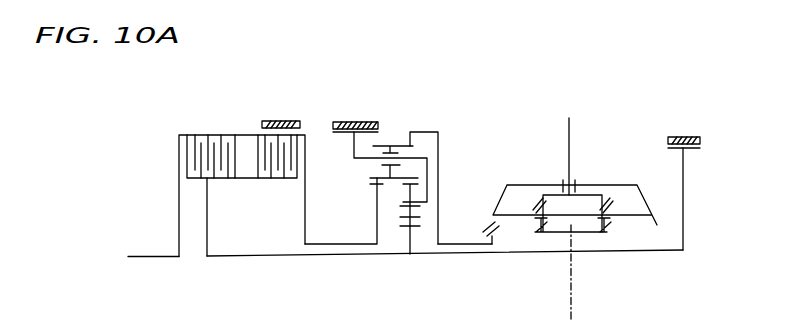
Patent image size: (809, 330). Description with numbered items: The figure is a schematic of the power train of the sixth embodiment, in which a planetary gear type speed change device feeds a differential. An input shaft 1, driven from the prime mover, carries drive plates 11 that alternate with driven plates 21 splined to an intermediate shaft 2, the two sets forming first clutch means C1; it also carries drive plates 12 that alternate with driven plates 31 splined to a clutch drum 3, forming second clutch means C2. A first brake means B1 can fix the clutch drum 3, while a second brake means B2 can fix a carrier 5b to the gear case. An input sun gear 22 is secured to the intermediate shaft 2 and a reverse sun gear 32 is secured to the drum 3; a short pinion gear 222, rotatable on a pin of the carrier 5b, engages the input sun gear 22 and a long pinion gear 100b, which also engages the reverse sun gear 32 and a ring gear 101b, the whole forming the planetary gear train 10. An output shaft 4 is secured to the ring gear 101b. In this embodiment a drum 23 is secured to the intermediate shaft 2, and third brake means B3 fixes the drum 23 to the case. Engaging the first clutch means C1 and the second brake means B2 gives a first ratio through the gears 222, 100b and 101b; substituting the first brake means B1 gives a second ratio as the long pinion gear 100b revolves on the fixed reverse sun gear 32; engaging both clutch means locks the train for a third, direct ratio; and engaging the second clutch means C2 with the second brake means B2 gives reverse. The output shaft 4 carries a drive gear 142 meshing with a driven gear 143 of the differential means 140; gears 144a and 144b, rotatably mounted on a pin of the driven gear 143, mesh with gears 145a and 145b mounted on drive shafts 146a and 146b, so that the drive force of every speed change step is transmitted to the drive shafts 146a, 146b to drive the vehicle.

The input shaft 1 is at (149, 256).
The intermediate shaft 2 is at (433, 254).
The clutch drum 3 is at (305, 150).
The output shaft 4 is at (468, 243).
The drive plates 11 is at (193, 140).
The driven plates 21 is at (217, 177).
The driven plates 31 is at (266, 140).
The drive plates 12 is at (275, 178).
The first clutch means C1 is at (192, 186).
The second clutch means C2 is at (267, 187).
The first brake means B1 is at (280, 120).
The second brake means B2 is at (340, 120).
The third brake means B3 is at (680, 136).
The carrier 5b is at (354, 151).
The planetary gear train 10 is at (385, 187).
The reverse sun gear 32 is at (377, 222).
The long pinion gear 100b is at (384, 142).
The ring gear 101b is at (405, 131).
The short pinion gear 222 is at (414, 213).
The input sun gear 22 is at (405, 254).
The drum 23 is at (687, 151).
The differential means 140 is at (572, 210).
The drive gear 142 is at (493, 245).
The driven gear 143 is at (498, 200).
The gear 144a is at (614, 220).
The gear 144b is at (530, 208).
The gear 145a is at (597, 198).
The gear 145b is at (585, 235).
The drive shaft 146a is at (573, 128).
The drive shaft 146b is at (571, 303).